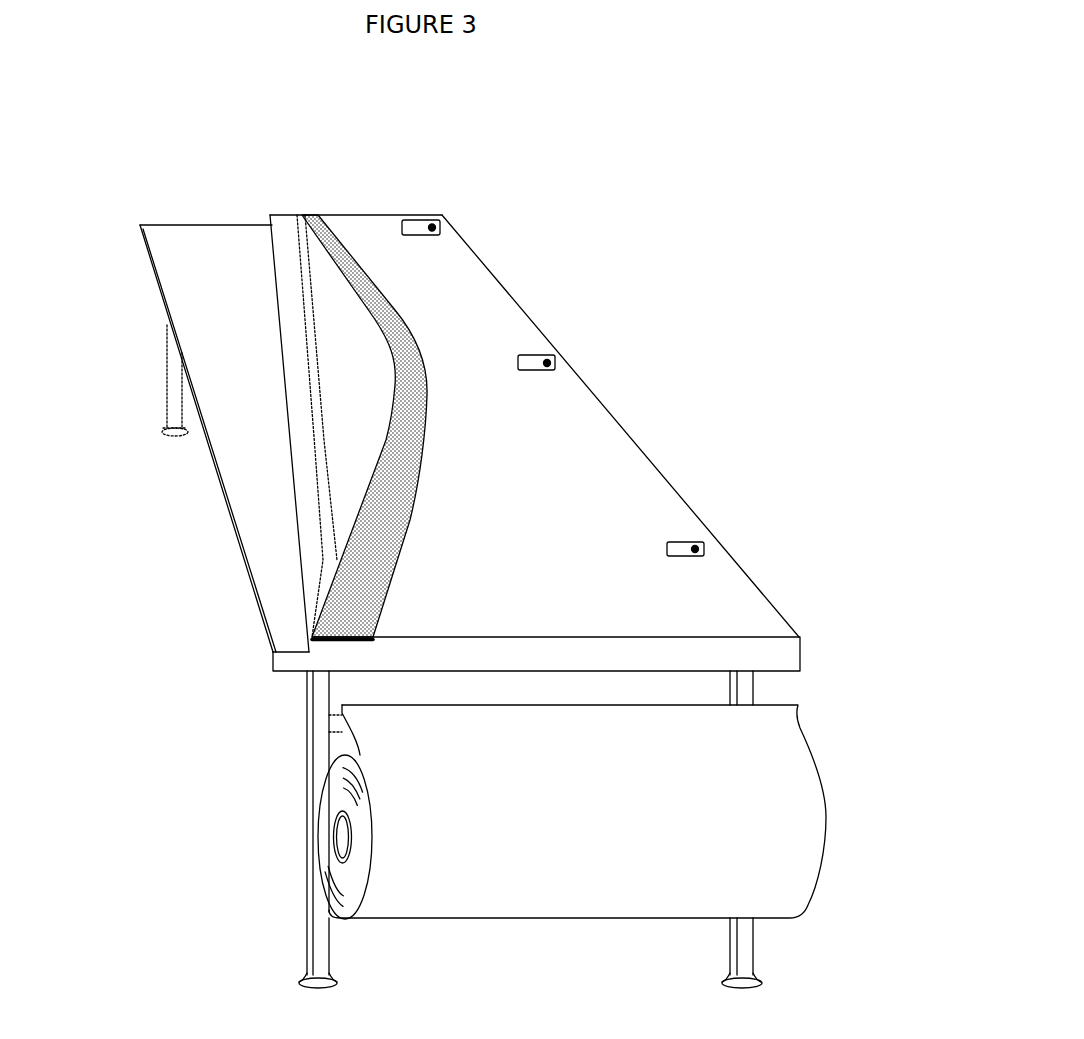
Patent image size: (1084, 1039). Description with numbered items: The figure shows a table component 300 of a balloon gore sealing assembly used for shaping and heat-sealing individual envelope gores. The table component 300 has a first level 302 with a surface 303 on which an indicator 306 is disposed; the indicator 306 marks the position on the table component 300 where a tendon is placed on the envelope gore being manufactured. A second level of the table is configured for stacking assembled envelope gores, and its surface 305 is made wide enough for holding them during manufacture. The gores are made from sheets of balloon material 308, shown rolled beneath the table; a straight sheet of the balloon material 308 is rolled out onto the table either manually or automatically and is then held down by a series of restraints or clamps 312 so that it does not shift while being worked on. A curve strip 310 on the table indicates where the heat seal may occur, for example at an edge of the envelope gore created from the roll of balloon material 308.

The table component 300 is at (779, 35).
The first level 302 is at (382, 213).
The surface 303 is at (210, 222).
The surface 305 is at (245, 367).
The indicator 306 is at (313, 442).
The balloon material 308 is at (482, 802).
The curve strip 310 is at (395, 512).
The clamps 312 is at (547, 363).